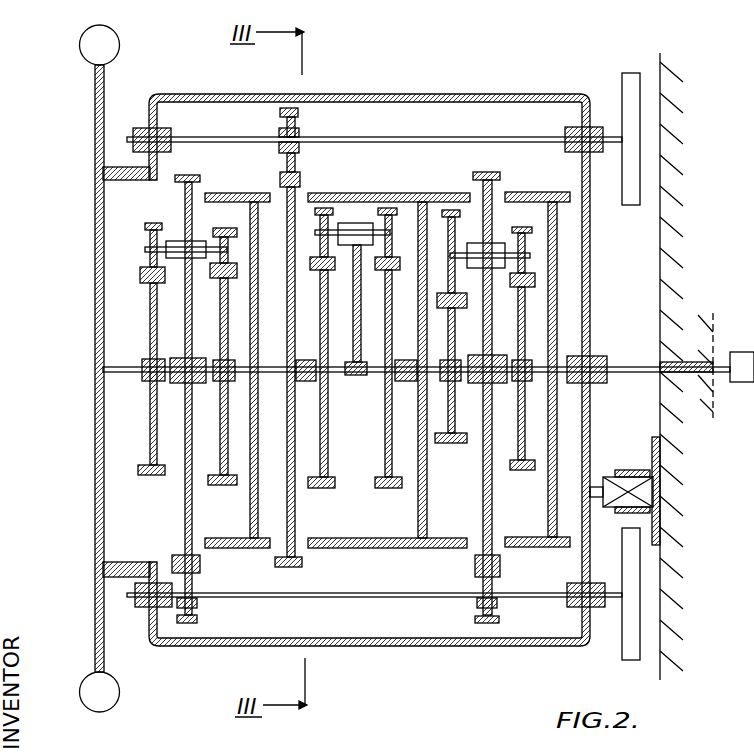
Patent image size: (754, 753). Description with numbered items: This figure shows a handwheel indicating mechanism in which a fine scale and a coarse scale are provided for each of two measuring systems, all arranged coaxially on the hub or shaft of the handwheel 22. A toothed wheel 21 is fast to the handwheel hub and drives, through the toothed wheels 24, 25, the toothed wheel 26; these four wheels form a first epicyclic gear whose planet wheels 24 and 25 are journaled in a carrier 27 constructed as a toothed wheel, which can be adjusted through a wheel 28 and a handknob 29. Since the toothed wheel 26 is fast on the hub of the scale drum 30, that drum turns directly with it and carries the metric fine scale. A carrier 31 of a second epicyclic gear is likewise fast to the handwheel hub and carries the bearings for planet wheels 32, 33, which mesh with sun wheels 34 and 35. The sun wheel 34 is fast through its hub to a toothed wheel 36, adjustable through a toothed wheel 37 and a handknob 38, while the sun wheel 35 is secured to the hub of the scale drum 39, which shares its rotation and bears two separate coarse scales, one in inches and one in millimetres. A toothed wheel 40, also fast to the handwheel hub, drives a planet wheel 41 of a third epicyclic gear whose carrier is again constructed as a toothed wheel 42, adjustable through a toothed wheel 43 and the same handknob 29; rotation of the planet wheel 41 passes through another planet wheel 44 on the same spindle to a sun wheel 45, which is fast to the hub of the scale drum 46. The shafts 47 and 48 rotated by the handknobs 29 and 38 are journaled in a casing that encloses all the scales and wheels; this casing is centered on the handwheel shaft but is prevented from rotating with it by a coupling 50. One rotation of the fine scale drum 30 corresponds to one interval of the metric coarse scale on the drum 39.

The toothed wheel 21 is at (150, 353).
The handwheel 22 is at (104, 490).
The toothed wheel 24 is at (147, 254).
The toothed wheel 25 is at (237, 222).
The toothed wheel 26 is at (220, 313).
The carrier 27 is at (193, 505).
The wheel 28 is at (197, 612).
The handknob 29 is at (626, 660).
The scale drum 30 is at (232, 548).
The carrier 31 is at (352, 345).
The planet wheel 32 is at (310, 222).
The planet wheel 33 is at (398, 222).
The sun wheel 34 is at (300, 373).
The sun wheel 35 is at (383, 345).
The toothed wheel 36 is at (293, 485).
The toothed wheel 37 is at (300, 120).
The handknob 38 is at (628, 205).
The scale drum 39 is at (370, 548).
The toothed wheel 40 is at (445, 405).
The planet wheel 41 is at (443, 222).
The toothed wheel 42 is at (492, 480).
The toothed wheel 43 is at (497, 612).
The planet wheel 44 is at (527, 245).
The sun wheel 45 is at (530, 325).
The scale drum 46 is at (527, 547).
The shaft 47 is at (360, 598).
The shaft 48 is at (402, 118).
The coupling 50 is at (627, 477).